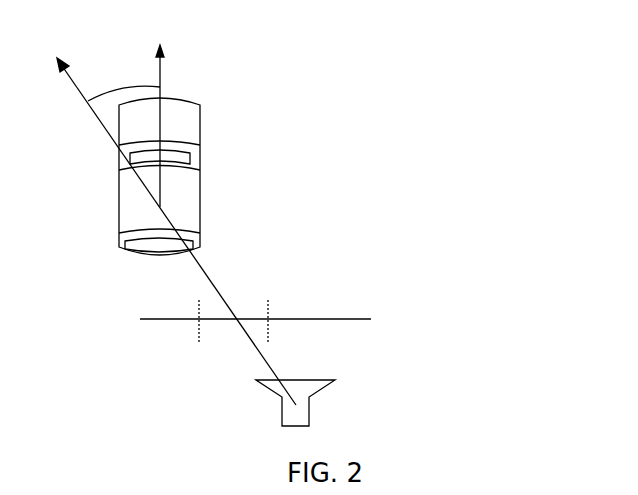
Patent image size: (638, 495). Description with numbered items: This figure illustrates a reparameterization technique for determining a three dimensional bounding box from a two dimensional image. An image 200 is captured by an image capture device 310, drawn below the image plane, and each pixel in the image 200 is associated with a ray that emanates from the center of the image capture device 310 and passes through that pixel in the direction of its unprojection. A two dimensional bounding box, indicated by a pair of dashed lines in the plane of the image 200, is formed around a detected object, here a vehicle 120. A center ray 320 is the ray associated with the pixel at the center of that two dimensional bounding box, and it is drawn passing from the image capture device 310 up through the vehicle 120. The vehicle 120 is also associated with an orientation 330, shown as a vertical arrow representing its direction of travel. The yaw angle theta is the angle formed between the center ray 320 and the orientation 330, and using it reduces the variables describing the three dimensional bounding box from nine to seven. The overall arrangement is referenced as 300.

The vehicle 120 is at (119, 200).
The image 200 is at (365, 318).
The coordinate system 300 is at (422, 146).
The image capture device 310 is at (283, 412).
The center ray 320 is at (212, 280).
The orientation 330 is at (161, 68).